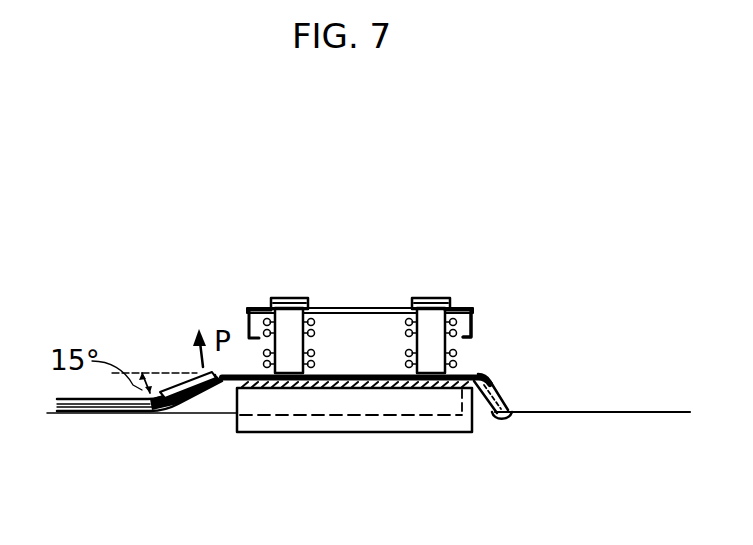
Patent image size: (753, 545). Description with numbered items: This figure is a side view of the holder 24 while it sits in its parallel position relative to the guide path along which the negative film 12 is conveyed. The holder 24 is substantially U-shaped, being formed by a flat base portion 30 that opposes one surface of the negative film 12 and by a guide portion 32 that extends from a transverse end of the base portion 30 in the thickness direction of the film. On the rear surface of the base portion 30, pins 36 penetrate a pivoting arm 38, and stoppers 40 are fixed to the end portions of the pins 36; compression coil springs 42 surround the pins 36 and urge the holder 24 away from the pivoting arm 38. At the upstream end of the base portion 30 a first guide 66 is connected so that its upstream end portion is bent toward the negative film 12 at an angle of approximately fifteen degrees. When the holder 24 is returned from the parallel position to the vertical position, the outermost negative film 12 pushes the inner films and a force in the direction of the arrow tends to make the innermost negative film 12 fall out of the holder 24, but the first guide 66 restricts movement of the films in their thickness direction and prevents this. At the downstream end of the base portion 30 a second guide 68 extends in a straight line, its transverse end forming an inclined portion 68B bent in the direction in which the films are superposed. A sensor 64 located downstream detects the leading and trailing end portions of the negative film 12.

The negative film 12 is at (103, 415).
The holder 24 is at (496, 371).
The base portion 30 is at (370, 373).
The guide portion 32 is at (462, 433).
The pin 36 is at (400, 334).
The pivoting arm 38 is at (477, 323).
The stopper 40 is at (270, 299).
The compression coil spring 42 is at (250, 308).
The sensor 64 is at (203, 400).
The first guide 66 is at (188, 377).
The second guide 68 is at (502, 397).
The inclined portion 68B is at (520, 413).